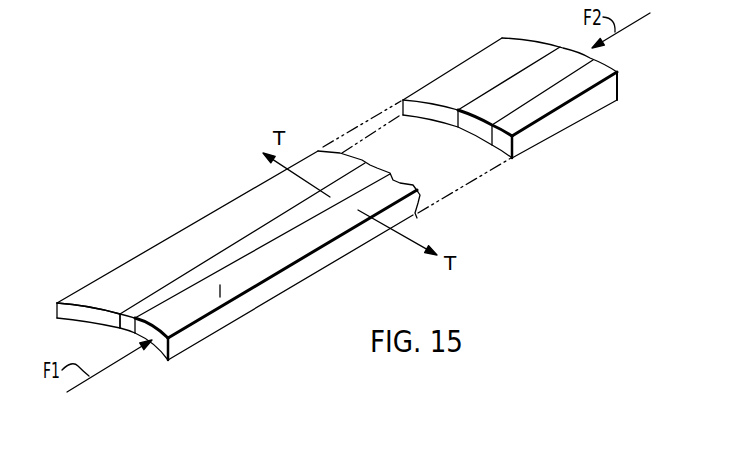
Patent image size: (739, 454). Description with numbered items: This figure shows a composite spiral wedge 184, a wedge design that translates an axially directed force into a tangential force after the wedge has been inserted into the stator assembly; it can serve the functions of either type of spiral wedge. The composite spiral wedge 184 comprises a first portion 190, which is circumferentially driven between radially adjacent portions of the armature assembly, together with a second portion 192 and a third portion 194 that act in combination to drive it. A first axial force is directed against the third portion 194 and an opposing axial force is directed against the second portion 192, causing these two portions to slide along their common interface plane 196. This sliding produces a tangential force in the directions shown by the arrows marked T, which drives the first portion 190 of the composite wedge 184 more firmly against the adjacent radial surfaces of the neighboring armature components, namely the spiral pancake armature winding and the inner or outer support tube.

The composite spiral wedge 184 is at (228, 181).
The first portion 190 is at (88, 314).
The second portion 192 is at (527, 77).
The third portion 194 is at (208, 328).
The common interface plane 196 is at (212, 268).